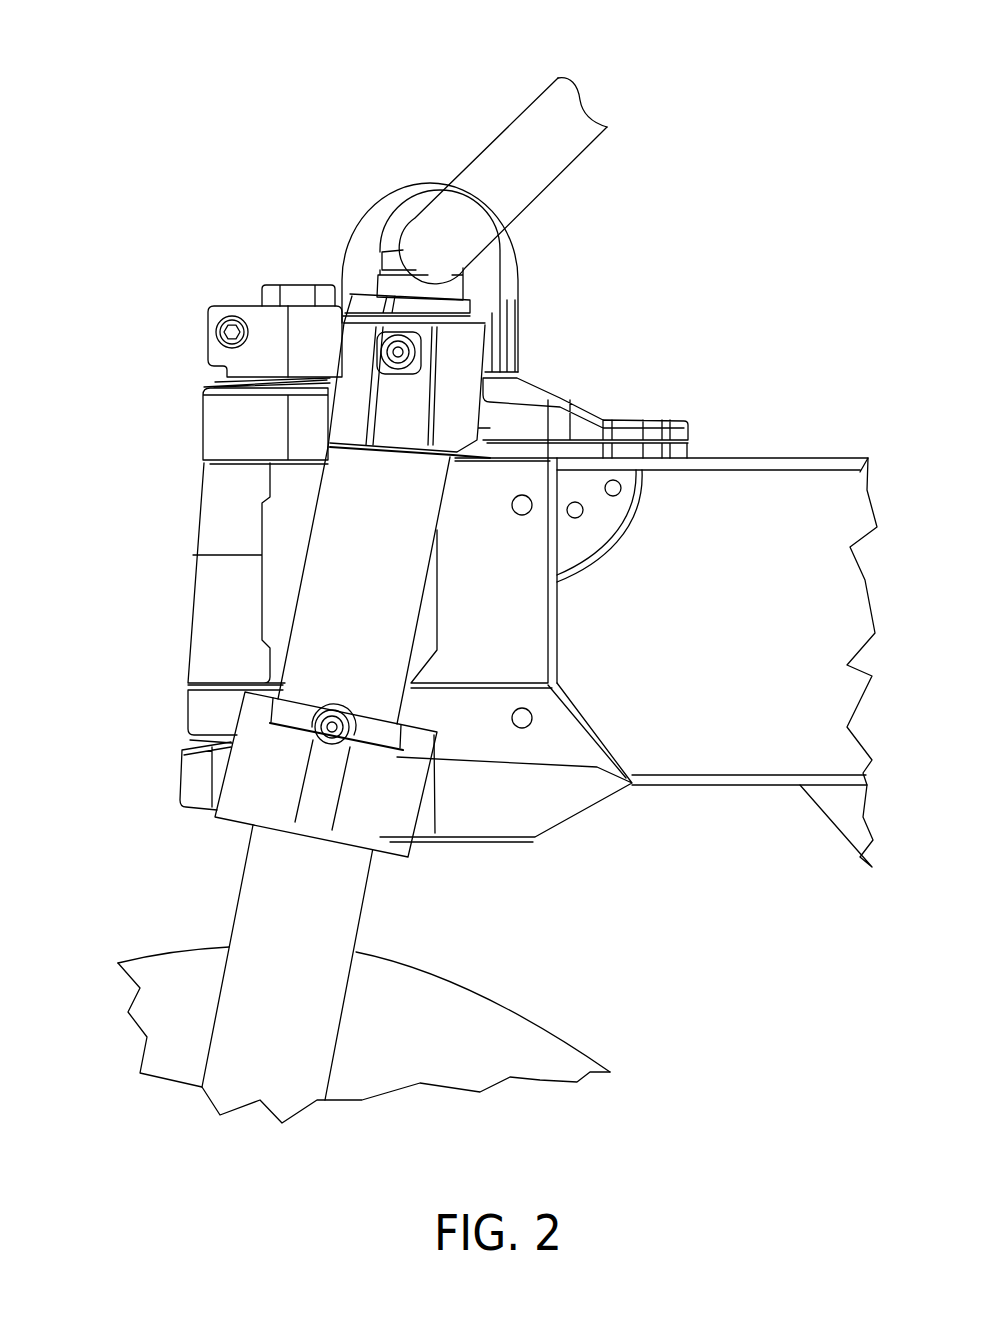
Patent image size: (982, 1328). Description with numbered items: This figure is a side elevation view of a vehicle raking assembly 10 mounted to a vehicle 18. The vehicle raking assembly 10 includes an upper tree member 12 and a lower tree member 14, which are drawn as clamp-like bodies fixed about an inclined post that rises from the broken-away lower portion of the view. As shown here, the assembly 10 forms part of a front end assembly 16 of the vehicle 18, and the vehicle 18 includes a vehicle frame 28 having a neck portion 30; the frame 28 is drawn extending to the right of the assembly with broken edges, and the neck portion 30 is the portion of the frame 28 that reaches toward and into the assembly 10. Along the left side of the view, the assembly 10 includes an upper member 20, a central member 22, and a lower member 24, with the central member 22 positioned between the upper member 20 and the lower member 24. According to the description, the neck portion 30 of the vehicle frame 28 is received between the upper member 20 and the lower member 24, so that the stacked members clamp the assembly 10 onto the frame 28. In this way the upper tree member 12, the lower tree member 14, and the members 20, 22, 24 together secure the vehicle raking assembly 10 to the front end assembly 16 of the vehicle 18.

The vehicle raking assembly 10 is at (105, 357).
The upper tree member 12 is at (262, 333).
The lower tree member 14 is at (253, 782).
The front end assembly 16 is at (254, 140).
The vehicle 18 is at (419, 72).
The upper member 20 is at (237, 425).
The central member 22 is at (223, 593).
The lower member 24 is at (210, 710).
The vehicle frame 28 is at (763, 510).
The neck portion 30 is at (677, 774).